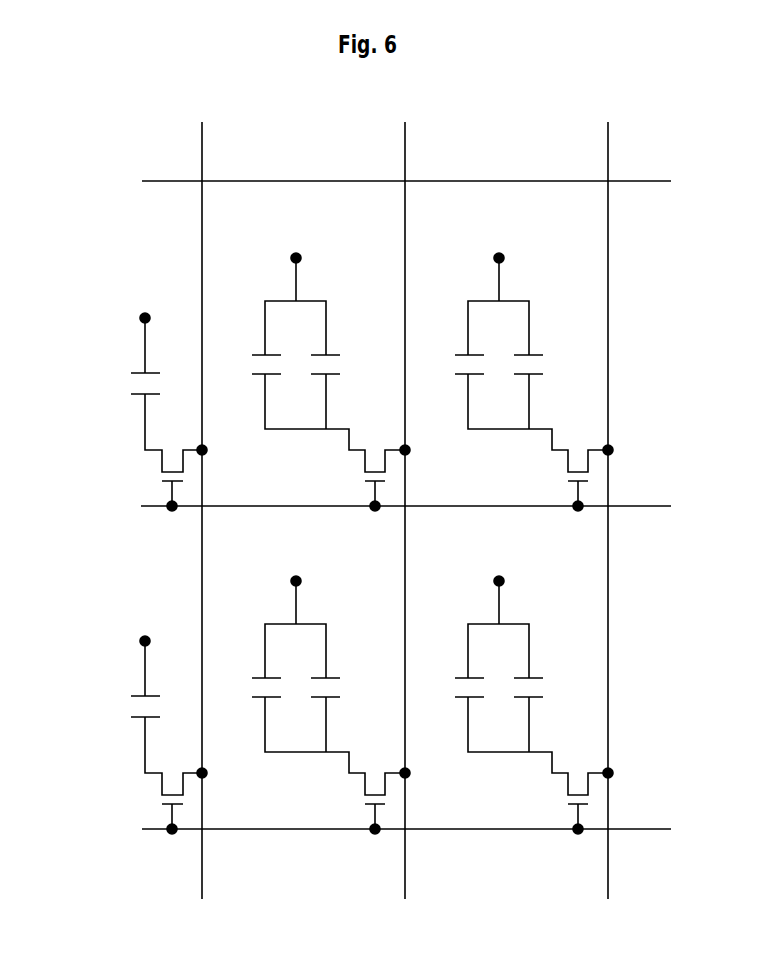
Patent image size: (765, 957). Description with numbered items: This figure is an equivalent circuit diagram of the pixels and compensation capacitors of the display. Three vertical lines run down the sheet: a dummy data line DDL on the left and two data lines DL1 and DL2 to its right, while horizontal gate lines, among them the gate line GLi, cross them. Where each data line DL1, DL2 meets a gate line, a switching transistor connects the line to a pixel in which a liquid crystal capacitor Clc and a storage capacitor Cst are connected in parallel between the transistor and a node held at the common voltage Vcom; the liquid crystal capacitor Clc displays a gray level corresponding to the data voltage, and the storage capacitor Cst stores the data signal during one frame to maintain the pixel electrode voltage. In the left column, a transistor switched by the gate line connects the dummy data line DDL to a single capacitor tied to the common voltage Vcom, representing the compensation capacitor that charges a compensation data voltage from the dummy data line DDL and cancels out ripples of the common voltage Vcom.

The dummy data line DDL is at (197, 497).
The data line DL1 is at (400, 497).
The data line DL2 is at (604, 497).
The gate line GLi is at (382, 502).
The common voltage Vcom is at (321, 460).
The liquid crystal capacitor Clc is at (349, 525).
The storage capacitor Cst is at (444, 525).